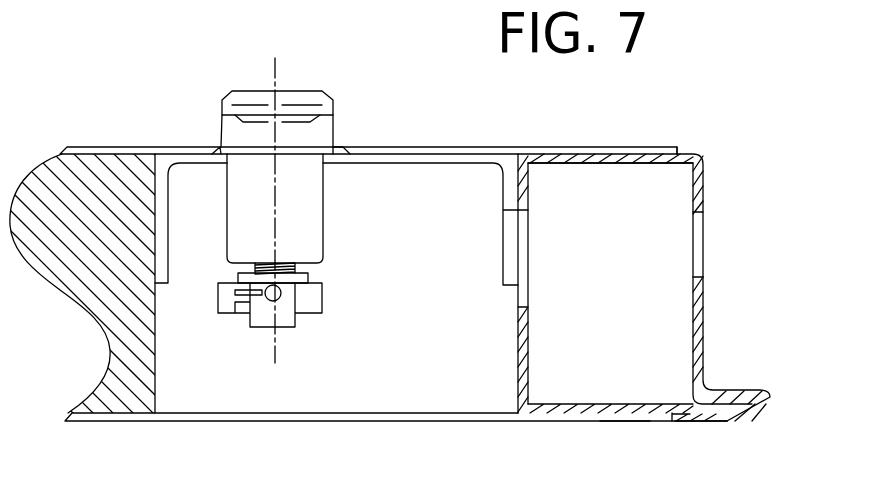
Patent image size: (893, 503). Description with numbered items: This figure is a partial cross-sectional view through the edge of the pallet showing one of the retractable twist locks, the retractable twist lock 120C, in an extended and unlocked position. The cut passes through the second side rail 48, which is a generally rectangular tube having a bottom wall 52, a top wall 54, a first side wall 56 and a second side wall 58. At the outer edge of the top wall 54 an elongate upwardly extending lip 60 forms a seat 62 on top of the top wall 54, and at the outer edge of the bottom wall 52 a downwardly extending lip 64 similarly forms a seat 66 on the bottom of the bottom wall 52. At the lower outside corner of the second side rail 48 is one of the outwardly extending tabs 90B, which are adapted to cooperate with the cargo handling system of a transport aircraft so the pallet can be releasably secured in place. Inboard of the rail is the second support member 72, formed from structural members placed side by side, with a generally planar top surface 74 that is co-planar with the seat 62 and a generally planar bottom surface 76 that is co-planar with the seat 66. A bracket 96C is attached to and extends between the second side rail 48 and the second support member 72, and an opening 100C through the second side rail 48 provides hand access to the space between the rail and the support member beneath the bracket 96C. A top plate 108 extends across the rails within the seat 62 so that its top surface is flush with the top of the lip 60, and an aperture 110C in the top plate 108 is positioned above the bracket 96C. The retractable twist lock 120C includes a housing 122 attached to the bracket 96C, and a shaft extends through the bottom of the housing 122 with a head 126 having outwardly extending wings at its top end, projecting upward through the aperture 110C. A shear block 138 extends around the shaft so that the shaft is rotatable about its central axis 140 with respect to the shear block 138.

The second side rail 48 is at (710, 175).
The bottom wall 52 is at (585, 404).
The top wall 54 is at (576, 165).
The first side wall 56 is at (704, 352).
The second side wall 58 is at (518, 364).
The lip 60 is at (692, 150).
The seat 62 is at (622, 153).
The lip 64 is at (690, 422).
The seat 66 is at (623, 422).
The second support member 72 is at (156, 366).
The top surface 74 is at (100, 148).
The bottom surface 76 is at (120, 414).
The tab 90B is at (769, 398).
The bracket 96C is at (505, 181).
The opening 100C is at (704, 278).
The top plate 108 is at (478, 148).
The aperture 110C is at (338, 147).
The retractable twist lock 120C is at (286, 187).
The housing 122 is at (308, 222).
The head 126 is at (243, 96).
The shear block 138 is at (221, 135).
The central axis 140 is at (278, 72).